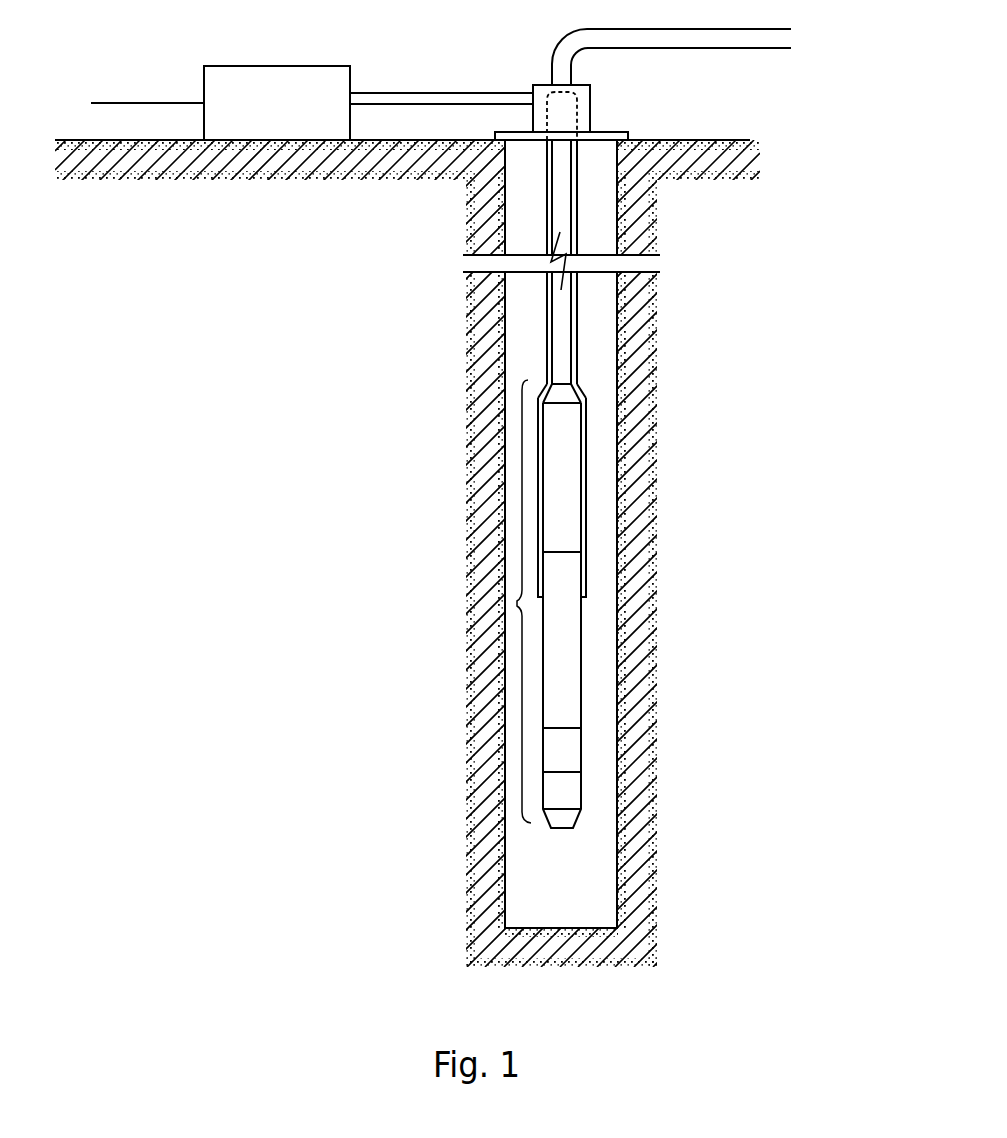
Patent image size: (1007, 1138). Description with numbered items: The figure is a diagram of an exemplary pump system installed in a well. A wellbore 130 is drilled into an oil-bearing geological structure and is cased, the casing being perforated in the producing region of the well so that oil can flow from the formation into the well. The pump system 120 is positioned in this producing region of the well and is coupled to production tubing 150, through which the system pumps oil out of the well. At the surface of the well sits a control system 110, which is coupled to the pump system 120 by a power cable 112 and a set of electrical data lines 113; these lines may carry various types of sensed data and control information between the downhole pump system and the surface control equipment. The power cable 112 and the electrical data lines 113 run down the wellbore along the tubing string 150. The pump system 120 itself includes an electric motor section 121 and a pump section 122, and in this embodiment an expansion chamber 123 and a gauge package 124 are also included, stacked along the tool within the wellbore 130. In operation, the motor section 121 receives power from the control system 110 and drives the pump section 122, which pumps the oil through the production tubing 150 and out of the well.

The control system 110 is at (280, 65).
The power cable 112 is at (437, 103).
The electrical data lines 113 is at (488, 92).
The pump system 120 is at (517, 604).
The electric motor section 121 is at (582, 641).
The pump section 122 is at (582, 425).
The expansion chamber 123 is at (582, 753).
The gauge package 124 is at (582, 800).
The wellbore 130 is at (621, 498).
The production tubing 150 is at (572, 336).